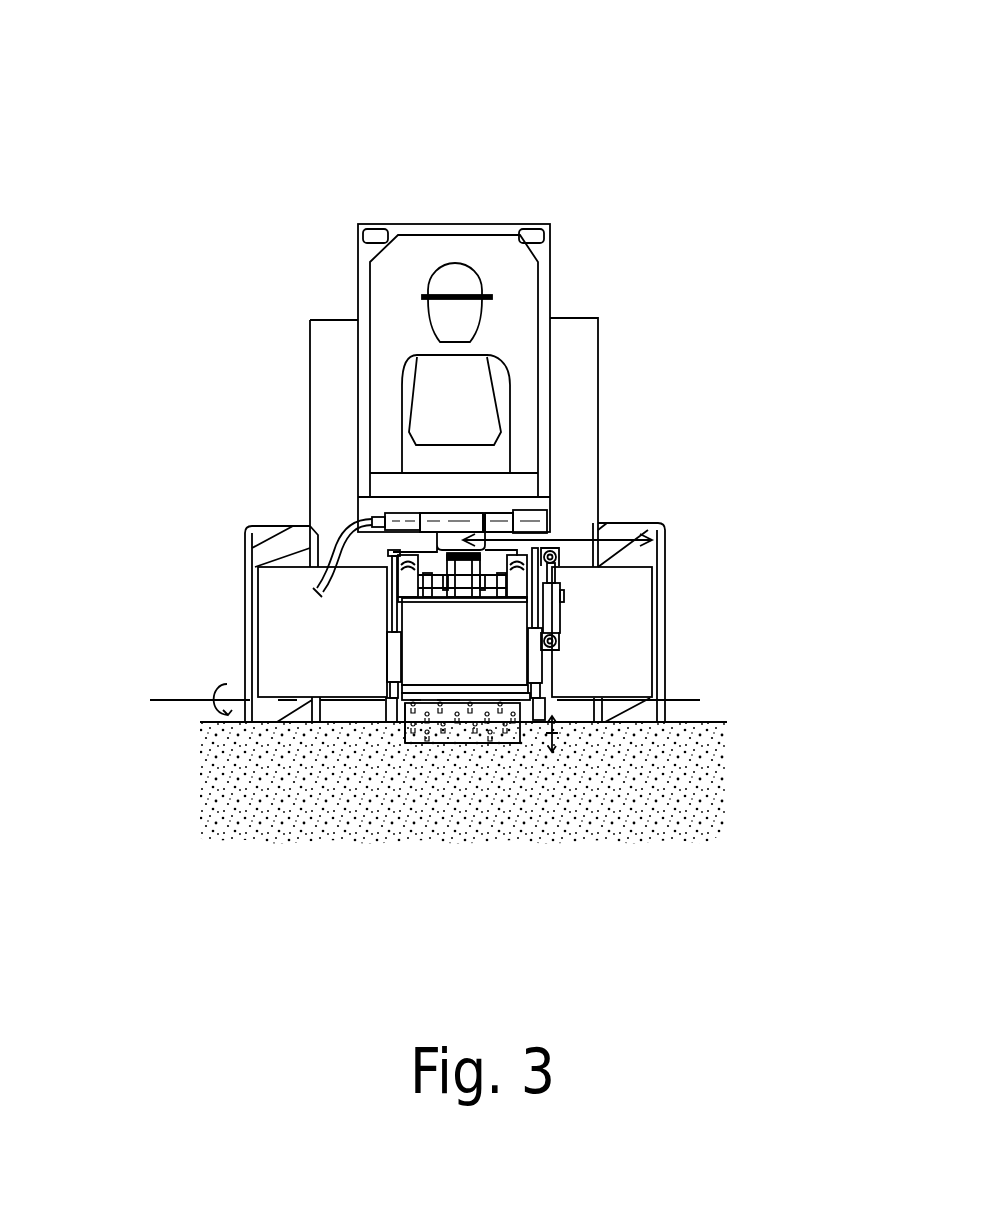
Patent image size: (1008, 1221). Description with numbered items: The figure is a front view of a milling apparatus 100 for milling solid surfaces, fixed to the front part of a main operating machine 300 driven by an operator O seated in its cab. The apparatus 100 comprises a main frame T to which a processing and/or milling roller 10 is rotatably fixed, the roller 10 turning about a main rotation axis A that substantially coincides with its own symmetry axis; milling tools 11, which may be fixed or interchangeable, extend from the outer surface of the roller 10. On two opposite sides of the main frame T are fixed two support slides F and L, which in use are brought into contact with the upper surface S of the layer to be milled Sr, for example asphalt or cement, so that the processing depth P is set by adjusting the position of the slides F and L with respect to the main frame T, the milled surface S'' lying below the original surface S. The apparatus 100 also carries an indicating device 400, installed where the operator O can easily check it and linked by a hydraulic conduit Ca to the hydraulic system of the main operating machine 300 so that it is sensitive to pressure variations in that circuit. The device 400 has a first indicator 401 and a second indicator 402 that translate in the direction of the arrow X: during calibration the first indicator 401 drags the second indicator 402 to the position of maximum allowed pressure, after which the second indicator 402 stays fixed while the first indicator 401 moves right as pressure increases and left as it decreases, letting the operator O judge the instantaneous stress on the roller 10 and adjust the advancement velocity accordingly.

The main operating machine 300 is at (328, 335).
The operator O is at (475, 264).
The indicating device 400 is at (455, 521).
The second indicator 402 is at (500, 521).
The first indicator 401 is at (533, 521).
The hydraulic conduit Ca is at (340, 532).
The arrow X is at (567, 540).
The main frame T is at (277, 583).
The apparatus 100 is at (507, 638).
The support slide F is at (387, 707).
The support slide L is at (548, 706).
The main rotation axis A is at (250, 700).
The upper surface S is at (476, 668).
The processing depth P is at (557, 733).
The processing and/or milling roller 10 is at (407, 728).
The milling tools 11 is at (475, 735).
The working surface S'' is at (472, 857).
The layer to be processed and/or milled Sr is at (705, 800).